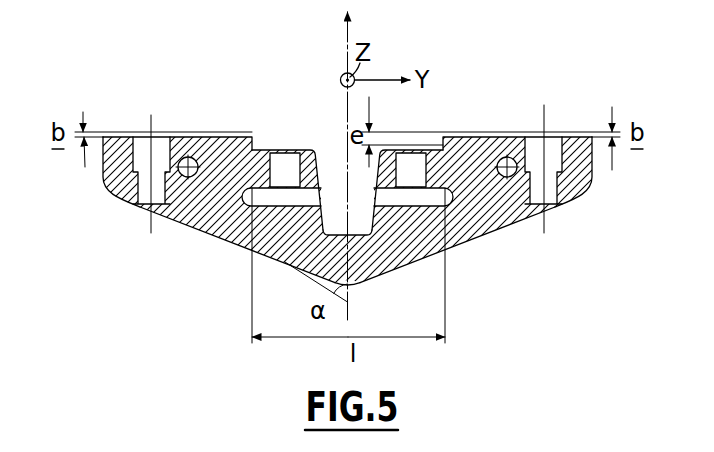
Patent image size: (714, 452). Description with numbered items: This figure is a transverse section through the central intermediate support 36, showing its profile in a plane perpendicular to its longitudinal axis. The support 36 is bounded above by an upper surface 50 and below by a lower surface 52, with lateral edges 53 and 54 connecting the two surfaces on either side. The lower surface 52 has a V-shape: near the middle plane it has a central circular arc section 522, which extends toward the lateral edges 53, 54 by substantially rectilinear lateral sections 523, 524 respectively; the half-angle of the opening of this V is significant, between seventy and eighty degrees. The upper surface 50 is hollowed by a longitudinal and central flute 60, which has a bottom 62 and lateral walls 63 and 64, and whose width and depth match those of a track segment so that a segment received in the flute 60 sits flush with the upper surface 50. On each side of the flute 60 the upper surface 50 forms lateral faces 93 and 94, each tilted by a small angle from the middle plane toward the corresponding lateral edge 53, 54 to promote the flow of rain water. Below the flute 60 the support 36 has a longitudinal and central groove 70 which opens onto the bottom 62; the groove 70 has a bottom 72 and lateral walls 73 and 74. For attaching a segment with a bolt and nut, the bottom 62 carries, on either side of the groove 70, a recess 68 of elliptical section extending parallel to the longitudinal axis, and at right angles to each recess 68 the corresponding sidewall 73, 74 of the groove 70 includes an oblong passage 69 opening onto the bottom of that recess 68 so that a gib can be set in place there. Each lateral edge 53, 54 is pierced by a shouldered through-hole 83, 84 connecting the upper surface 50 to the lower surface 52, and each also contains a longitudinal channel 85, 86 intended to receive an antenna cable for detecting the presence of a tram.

The central intermediate support 36 is at (110, 100).
The upper surface 50 is at (220, 130).
The lower surface 52 is at (415, 268).
The lateral edge 53 is at (95, 178).
The lateral edge 54 is at (597, 175).
The flute 60 is at (299, 132).
The bottom of the flute 62 is at (283, 152).
The lateral wall of the flute 63 is at (253, 141).
The lateral wall of the flute 64 is at (444, 148).
The recess 68 is at (200, 220).
The passage 69 is at (248, 228).
The groove 70 is at (335, 222).
The bottom of the groove 72 is at (361, 231).
The lateral wall of the groove 73 is at (285, 263).
The lateral wall of the groove 74 is at (365, 252).
The through-hole 83 is at (140, 147).
The through-hole 84 is at (550, 140).
The channel 85 is at (168, 140).
The channel 86 is at (495, 140).
The lateral face 93 is at (190, 134).
The lateral face 94 is at (467, 136).
The central circular arc section 522 is at (358, 292).
The rectilinear lateral section 523 is at (178, 222).
The rectilinear lateral section 524 is at (508, 225).